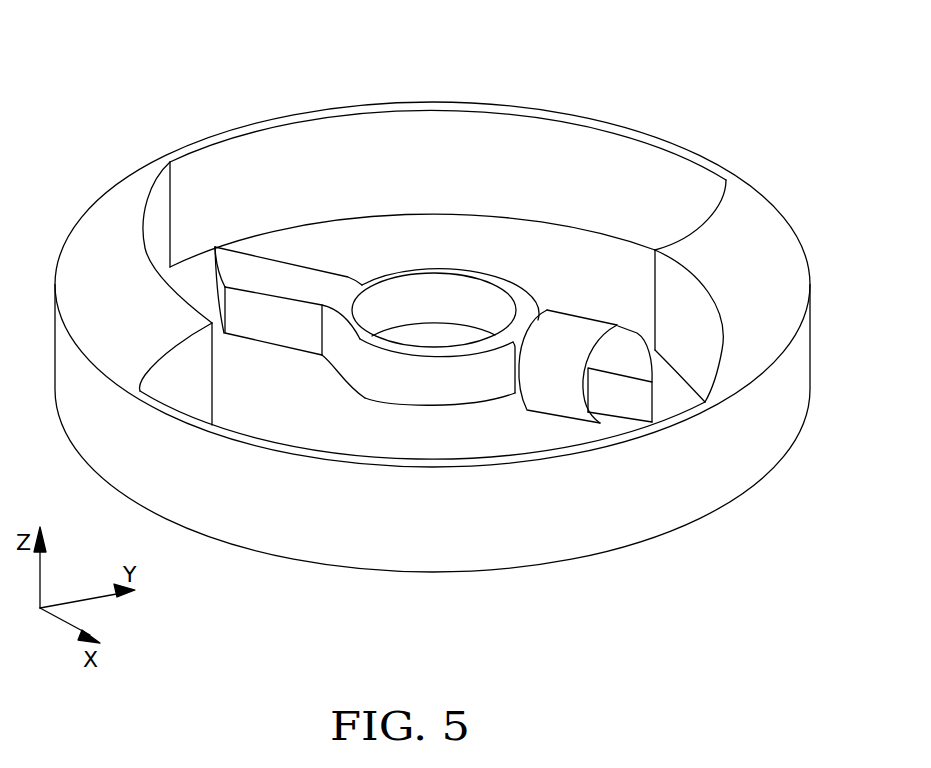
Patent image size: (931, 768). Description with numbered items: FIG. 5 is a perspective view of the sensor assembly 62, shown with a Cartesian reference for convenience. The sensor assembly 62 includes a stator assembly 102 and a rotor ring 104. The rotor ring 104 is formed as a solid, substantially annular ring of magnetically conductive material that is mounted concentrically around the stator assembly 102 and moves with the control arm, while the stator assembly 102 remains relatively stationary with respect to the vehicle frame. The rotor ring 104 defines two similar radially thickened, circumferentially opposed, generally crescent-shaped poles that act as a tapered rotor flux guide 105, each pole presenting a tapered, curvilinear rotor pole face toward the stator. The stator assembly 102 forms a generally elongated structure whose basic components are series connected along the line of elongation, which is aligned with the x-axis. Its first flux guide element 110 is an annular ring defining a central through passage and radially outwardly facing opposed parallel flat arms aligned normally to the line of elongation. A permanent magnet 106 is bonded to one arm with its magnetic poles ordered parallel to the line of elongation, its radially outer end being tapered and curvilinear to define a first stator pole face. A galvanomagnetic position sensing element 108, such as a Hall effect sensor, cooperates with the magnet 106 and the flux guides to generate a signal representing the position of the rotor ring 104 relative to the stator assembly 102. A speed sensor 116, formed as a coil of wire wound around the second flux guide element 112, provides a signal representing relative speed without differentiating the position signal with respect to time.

The sensor assembly 62 is at (107, 137).
The stator assembly 102 is at (490, 270).
The rotor ring 104 is at (808, 358).
The rotor flux guide 105 is at (100, 295).
The permanent magnet 106 is at (305, 290).
The galvanomagnetic position sensing element 108 is at (516, 402).
The first flux guide element 110 is at (418, 397).
The second flux guide element 112 is at (627, 398).
The speed sensor 116 is at (575, 325).